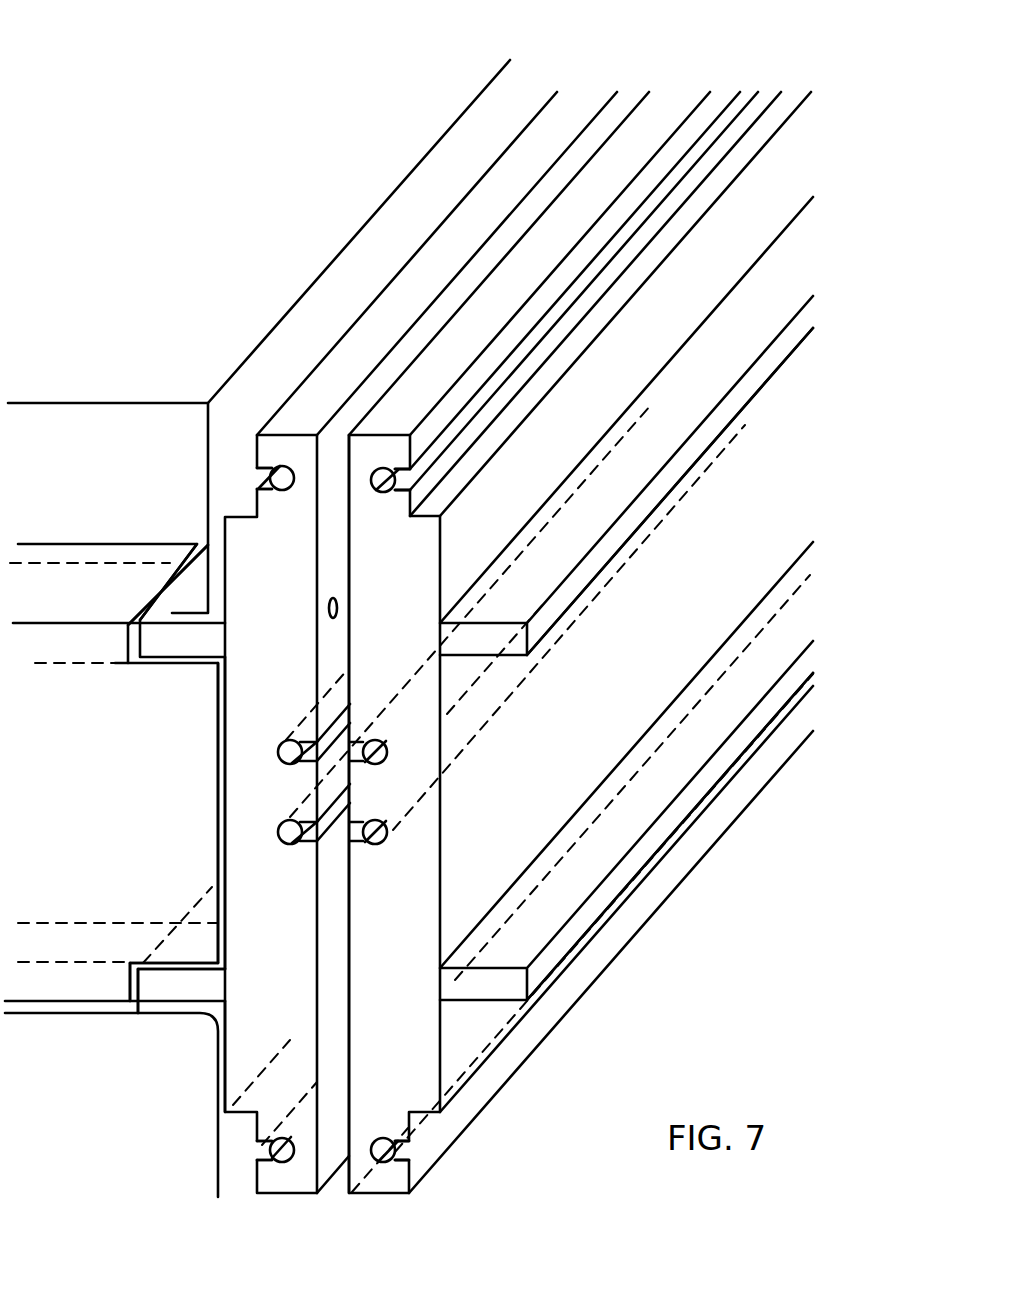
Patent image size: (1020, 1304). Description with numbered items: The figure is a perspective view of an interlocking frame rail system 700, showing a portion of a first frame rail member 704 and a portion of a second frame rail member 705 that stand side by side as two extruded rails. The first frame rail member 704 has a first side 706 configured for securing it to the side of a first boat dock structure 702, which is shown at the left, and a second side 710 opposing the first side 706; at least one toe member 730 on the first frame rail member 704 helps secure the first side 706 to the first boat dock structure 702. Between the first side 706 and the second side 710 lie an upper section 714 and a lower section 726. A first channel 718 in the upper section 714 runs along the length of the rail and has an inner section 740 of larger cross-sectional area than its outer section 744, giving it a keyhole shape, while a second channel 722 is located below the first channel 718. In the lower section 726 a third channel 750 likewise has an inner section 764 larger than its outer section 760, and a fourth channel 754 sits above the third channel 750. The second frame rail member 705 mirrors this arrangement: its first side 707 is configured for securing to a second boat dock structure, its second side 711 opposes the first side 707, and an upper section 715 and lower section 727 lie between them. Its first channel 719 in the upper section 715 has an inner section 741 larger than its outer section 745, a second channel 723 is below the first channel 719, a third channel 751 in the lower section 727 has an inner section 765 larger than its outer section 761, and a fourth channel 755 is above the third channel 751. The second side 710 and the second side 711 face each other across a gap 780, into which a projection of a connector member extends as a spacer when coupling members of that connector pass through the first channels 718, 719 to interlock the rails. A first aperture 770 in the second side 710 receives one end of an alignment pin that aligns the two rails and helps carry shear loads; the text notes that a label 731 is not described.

The interlocking frame rail system 700 is at (360, 138).
The first boat dock structure 702 is at (125, 335).
The first frame rail member 704 is at (326, 347).
The second frame rail member 705 is at (487, 314).
The first side 706 is at (222, 547).
The first side 707 is at (441, 553).
The second side 710 is at (318, 468).
The second side 711 is at (352, 548).
The upper section 714 is at (307, 415).
The upper section 715 is at (402, 412).
The first channel 718 is at (277, 491).
The first channel 719 is at (375, 491).
The second channel 722 is at (280, 750).
The second channel 723 is at (383, 738).
The lower section 726 is at (202, 860).
The lower section 727 is at (460, 893).
The toe member 730 is at (155, 643).
The flange underside 731 is at (517, 658).
The inner section 740 is at (290, 473).
The inner section 741 is at (373, 480).
The outer section 744 is at (272, 491).
The outer section 745 is at (405, 483).
The third channel 750 is at (292, 1140).
The third channel 751 is at (382, 1137).
The fourth channel 754 is at (287, 845).
The fourth channel 755 is at (373, 848).
The outer section 760 is at (267, 1160).
The outer section 761 is at (418, 1147).
The inner section 764 is at (298, 1167).
The inner section 765 is at (388, 1167).
The first aperture 770 is at (328, 612).
The gap 780 is at (336, 653).